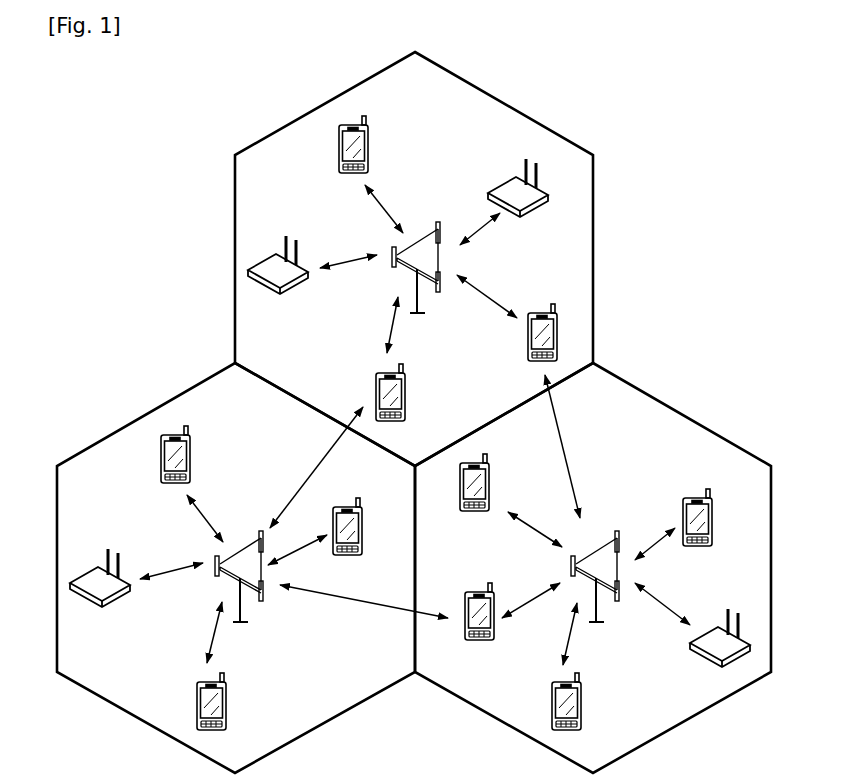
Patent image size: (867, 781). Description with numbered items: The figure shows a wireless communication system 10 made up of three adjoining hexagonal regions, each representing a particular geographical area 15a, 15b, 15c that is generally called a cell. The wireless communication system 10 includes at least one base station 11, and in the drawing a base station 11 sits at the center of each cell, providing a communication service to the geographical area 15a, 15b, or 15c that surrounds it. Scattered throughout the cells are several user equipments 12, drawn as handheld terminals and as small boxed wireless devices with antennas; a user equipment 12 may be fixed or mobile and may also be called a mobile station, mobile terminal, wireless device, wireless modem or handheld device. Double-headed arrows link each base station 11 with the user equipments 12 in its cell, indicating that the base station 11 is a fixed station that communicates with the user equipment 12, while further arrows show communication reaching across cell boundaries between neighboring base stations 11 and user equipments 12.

The wireless communication system 10 is at (667, 160).
The base station 11 is at (432, 233).
The user equipment 12 is at (368, 147).
The geographical area 15a is at (593, 243).
The geographical area 15b is at (705, 427).
The geographical area 15c is at (122, 427).